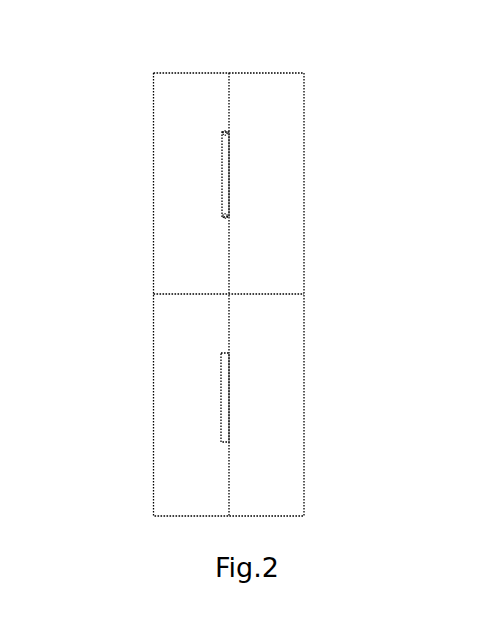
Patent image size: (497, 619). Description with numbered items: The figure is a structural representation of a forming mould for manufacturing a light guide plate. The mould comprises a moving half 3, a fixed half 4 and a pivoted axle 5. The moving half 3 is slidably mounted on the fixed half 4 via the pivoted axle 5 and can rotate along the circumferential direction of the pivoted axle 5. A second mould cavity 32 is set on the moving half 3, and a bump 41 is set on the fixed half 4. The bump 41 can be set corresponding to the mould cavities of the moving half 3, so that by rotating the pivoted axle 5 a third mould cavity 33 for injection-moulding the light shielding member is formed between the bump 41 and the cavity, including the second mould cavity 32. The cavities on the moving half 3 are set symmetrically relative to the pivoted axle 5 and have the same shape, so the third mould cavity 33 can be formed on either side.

The moving half 3 is at (181, 261).
The fixed half 4 is at (268, 248).
The pivoted axle 5 is at (262, 295).
The second mould cavity 32 is at (225, 397).
The third mould cavity 33 is at (229, 132).
The bump 41 is at (223, 172).